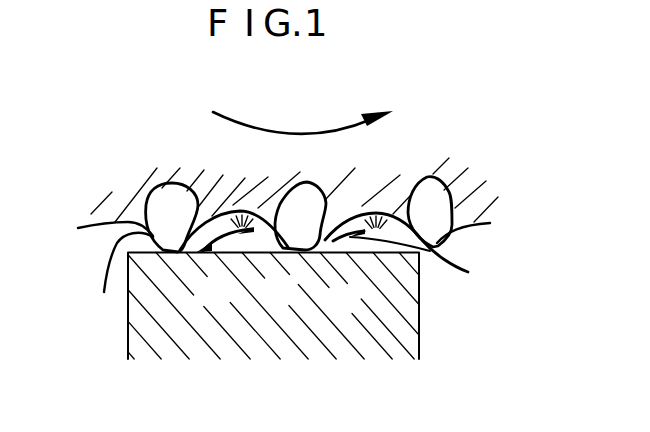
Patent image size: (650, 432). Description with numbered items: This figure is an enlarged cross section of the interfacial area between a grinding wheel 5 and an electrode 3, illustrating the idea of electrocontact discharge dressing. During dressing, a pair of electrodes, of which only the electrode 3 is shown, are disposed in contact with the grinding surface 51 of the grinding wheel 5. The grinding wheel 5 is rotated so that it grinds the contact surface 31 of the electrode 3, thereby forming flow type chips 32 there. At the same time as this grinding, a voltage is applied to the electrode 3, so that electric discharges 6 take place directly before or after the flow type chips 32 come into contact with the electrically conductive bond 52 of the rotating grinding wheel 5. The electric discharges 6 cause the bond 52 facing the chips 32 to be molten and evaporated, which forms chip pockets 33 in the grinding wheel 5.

The electrode 3 is at (398, 328).
The contact surface 31 is at (357, 257).
The flow type chips 32 is at (217, 238).
The chip pockets 33 is at (252, 232).
The grinding wheel 5 is at (482, 173).
The grinding surface 51 is at (118, 274).
The electrically conductive bond 52 is at (112, 248).
The electric discharges 6 is at (250, 213).